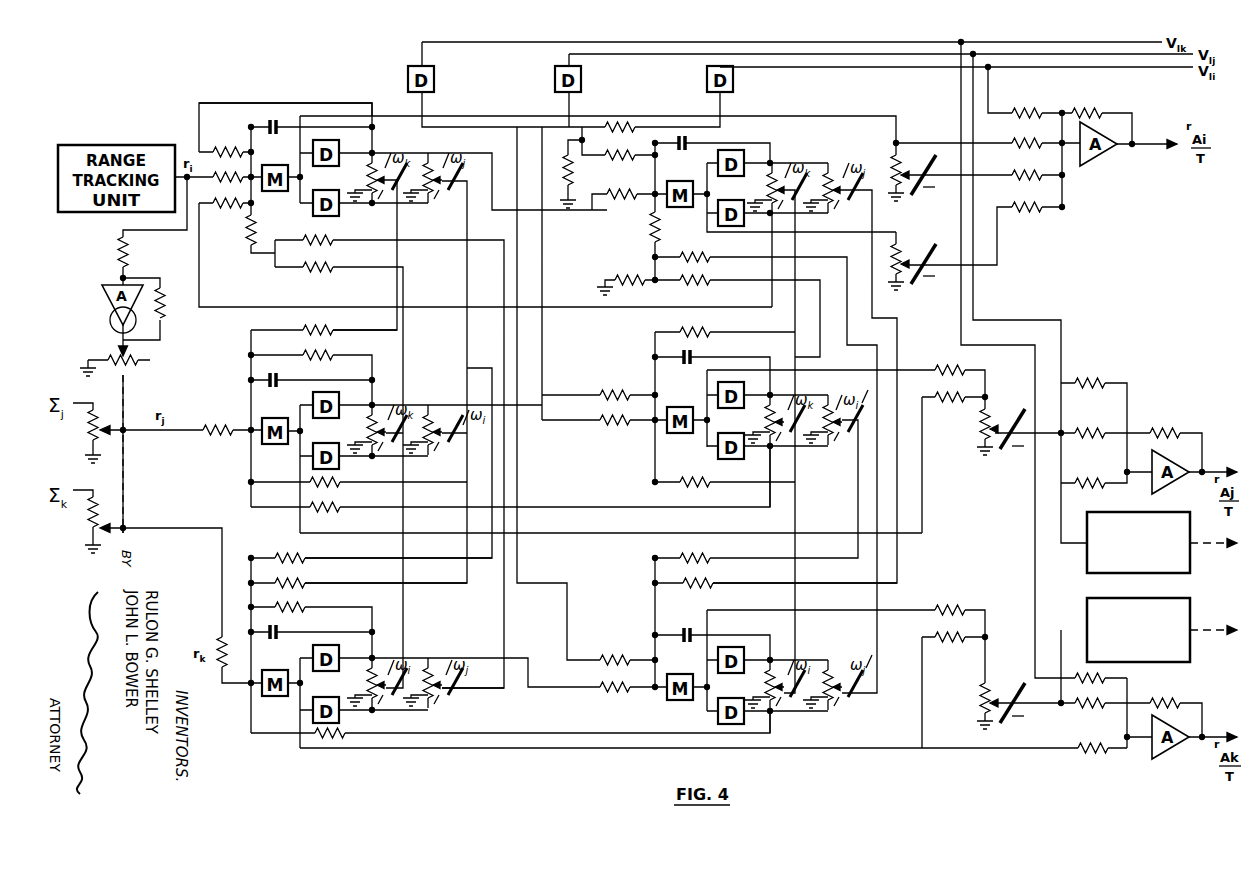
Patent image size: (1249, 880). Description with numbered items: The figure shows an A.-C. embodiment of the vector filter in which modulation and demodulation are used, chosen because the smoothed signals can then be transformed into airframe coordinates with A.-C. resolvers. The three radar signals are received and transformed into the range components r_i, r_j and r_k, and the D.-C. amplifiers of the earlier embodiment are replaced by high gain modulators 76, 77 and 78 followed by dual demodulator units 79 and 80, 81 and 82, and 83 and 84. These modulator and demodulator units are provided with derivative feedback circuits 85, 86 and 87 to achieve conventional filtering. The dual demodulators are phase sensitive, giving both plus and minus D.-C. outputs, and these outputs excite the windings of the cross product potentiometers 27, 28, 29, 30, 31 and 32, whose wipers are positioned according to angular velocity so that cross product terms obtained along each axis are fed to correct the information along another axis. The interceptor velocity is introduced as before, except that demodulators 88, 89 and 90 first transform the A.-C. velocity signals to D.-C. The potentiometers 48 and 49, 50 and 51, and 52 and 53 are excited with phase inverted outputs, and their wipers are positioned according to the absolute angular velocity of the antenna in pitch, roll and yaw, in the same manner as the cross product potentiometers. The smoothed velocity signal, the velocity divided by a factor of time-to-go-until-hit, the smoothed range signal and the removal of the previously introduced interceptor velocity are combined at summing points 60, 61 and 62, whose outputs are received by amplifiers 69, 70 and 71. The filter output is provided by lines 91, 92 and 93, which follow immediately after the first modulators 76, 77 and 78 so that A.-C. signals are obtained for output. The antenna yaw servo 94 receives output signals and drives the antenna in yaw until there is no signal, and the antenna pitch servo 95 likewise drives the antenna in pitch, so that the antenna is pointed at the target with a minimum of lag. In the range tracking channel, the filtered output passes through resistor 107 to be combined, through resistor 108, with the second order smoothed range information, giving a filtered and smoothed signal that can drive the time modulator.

The resistor 107 is at (215, 148).
The resistor 108 is at (229, 210).
The high gain modulator 76 is at (284, 192).
The high gain modulator 77 is at (280, 446).
The high gain modulator 78 is at (284, 698).
The demodulator 79 is at (323, 168).
The demodulator 80 is at (317, 216).
The demodulator 81 is at (340, 407).
The demodulator 82 is at (340, 467).
The demodulator 83 is at (325, 673).
The demodulator 84 is at (340, 722).
The derivative feedback circuit 85 is at (350, 118).
The derivative feedback circuit 86 is at (343, 358).
The derivative feedback circuit 87 is at (341, 610).
The cross product potentiometer 27 is at (381, 205).
The cross product potentiometer 28 is at (431, 205).
The cross product potentiometer 29 is at (381, 457).
The cross product potentiometer 30 is at (432, 457).
The cross product potentiometer 31 is at (379, 662).
The cross product potentiometer 32 is at (434, 662).
The potentiometer 48 is at (780, 167).
The potentiometer 49 is at (840, 167).
The potentiometer 50 is at (787, 441).
The potentiometer 51 is at (832, 447).
The potentiometer 52 is at (793, 707).
The potentiometer 53 is at (838, 707).
The demodulator 88 is at (407, 70).
The demodulator 89 is at (553, 72).
The demodulator 90 is at (706, 79).
The output line 91 is at (400, 115).
The output line 92 is at (378, 535).
The output line 93 is at (605, 749).
The summing point 60 is at (1063, 208).
The summing point 61 is at (1118, 487).
The summing point 62 is at (1126, 751).
The amplifier 69 is at (1112, 151).
The amplifier 70 is at (1176, 484).
The amplifier 71 is at (1174, 753).
The antenna yaw servo 94 is at (1090, 569).
The antenna pitch servo 95 is at (1087, 623).